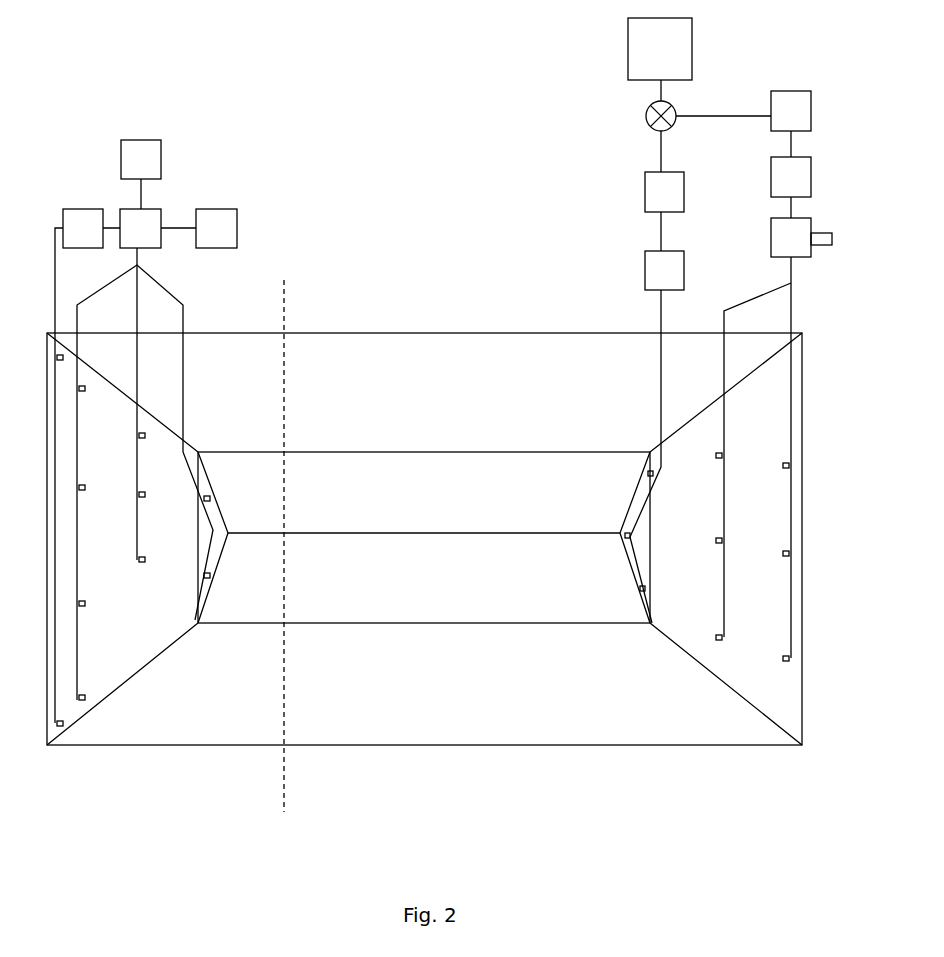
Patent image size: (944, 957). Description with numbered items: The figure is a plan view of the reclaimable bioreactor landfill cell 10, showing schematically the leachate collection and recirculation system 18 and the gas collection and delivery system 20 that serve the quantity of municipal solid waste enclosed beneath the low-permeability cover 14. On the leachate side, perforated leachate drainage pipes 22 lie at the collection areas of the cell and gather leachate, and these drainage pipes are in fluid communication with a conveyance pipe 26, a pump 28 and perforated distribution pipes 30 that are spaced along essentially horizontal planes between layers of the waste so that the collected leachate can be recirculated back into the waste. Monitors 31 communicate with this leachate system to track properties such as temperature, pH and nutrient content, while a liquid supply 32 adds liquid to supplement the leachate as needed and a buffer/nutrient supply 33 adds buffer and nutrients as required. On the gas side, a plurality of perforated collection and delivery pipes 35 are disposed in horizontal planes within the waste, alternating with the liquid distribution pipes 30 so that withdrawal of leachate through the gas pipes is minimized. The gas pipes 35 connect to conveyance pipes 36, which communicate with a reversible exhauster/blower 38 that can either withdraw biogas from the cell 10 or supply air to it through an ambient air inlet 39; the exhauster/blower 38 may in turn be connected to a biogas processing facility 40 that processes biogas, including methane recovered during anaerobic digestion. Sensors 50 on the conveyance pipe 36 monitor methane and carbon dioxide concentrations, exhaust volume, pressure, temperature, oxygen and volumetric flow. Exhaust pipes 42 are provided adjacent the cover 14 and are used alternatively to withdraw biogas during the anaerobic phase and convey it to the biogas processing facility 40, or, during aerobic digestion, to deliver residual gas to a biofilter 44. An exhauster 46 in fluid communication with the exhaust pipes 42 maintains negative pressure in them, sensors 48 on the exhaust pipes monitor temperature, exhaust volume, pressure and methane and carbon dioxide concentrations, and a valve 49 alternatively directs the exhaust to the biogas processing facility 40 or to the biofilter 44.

The reclaimable bioreactor landfill cell 10 is at (377, 288).
The cover 14 is at (514, 717).
The leachate collection and recirculation system 18 is at (182, 210).
The gas collection and delivery system 20 is at (807, 275).
The leachate drainage pipes 22 is at (57, 357).
The conveyance pipe 26 is at (55, 257).
The pump 28 is at (140, 228).
The perforated distribution pipes 30 is at (144, 435).
The monitors 31 is at (83, 228).
The liquid supply 32 is at (141, 159).
The buffer/nutrient supply 33 is at (216, 228).
The perforated collection and delivery pipes 35 is at (786, 463).
The conveyance pipes 36 is at (790, 297).
The reversible exhauster/blower 38 is at (791, 237).
The ambient air inlet 39 is at (818, 232).
The biogas processing facility 40 is at (791, 111).
The exhaust pipes 42 is at (625, 522).
The biofilter 44 is at (660, 49).
The exhauster 46 is at (664, 270).
The sensors 48 is at (664, 192).
The valve 49 is at (647, 110).
The sensors 50 is at (791, 177).